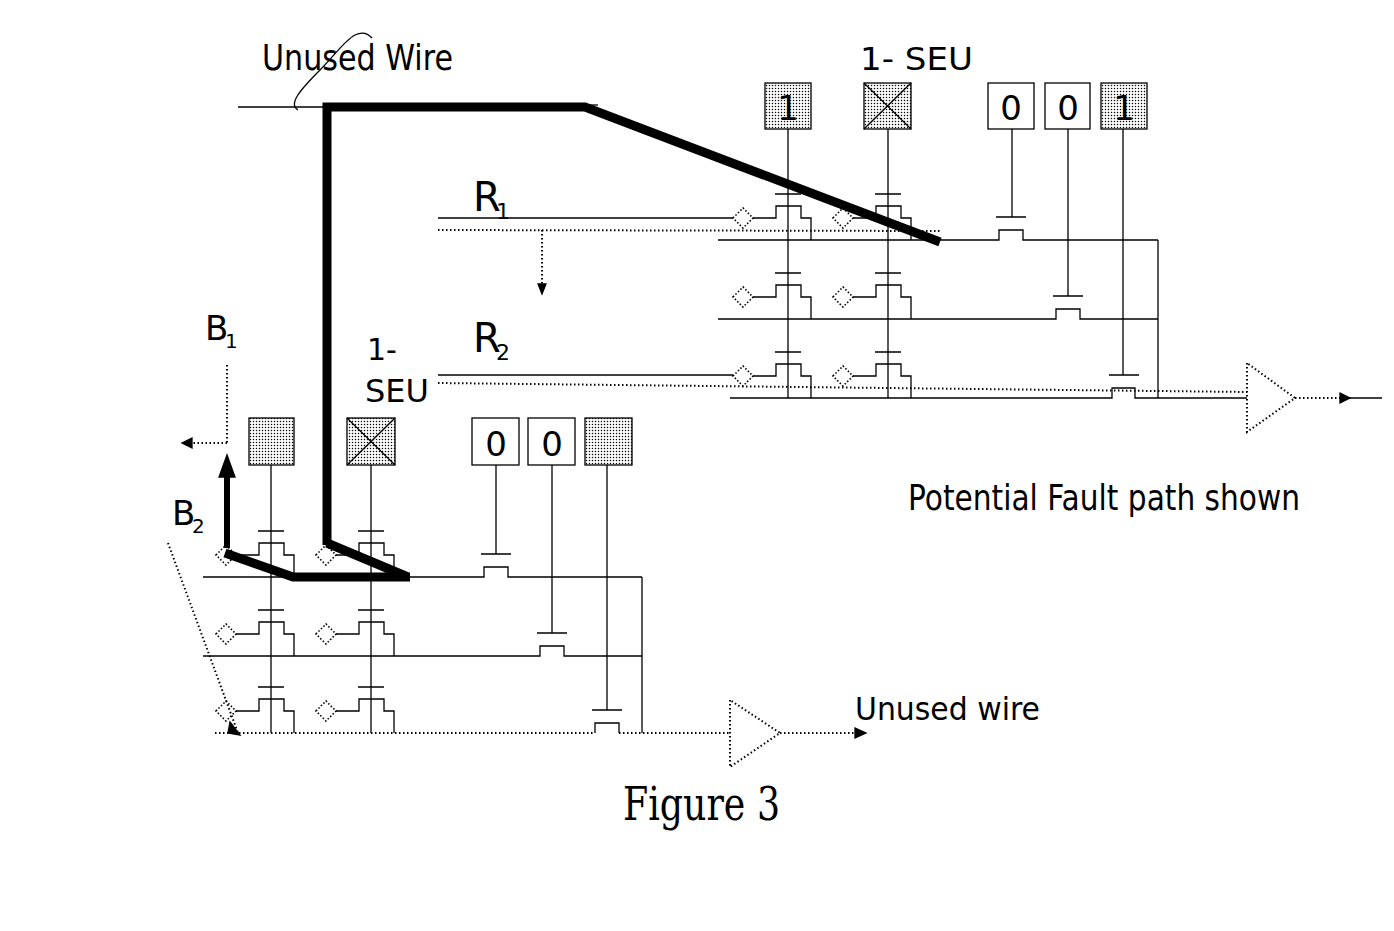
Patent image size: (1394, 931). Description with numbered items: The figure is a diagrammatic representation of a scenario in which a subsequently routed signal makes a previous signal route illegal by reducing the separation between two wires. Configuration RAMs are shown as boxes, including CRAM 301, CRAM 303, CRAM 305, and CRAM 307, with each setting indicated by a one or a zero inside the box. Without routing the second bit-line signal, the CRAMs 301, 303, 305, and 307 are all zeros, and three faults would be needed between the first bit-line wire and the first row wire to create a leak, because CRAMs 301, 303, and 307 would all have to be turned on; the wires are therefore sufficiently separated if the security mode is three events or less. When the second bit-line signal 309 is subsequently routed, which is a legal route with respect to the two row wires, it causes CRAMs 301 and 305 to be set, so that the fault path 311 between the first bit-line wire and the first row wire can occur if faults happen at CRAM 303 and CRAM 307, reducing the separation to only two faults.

The CRAM 301 is at (276, 418).
The CRAM 303 is at (395, 428).
The CRAM 305 is at (632, 442).
The CRAM 307 is at (858, 98).
The signal B2 309 is at (478, 734).
The fault path 311 is at (323, 193).